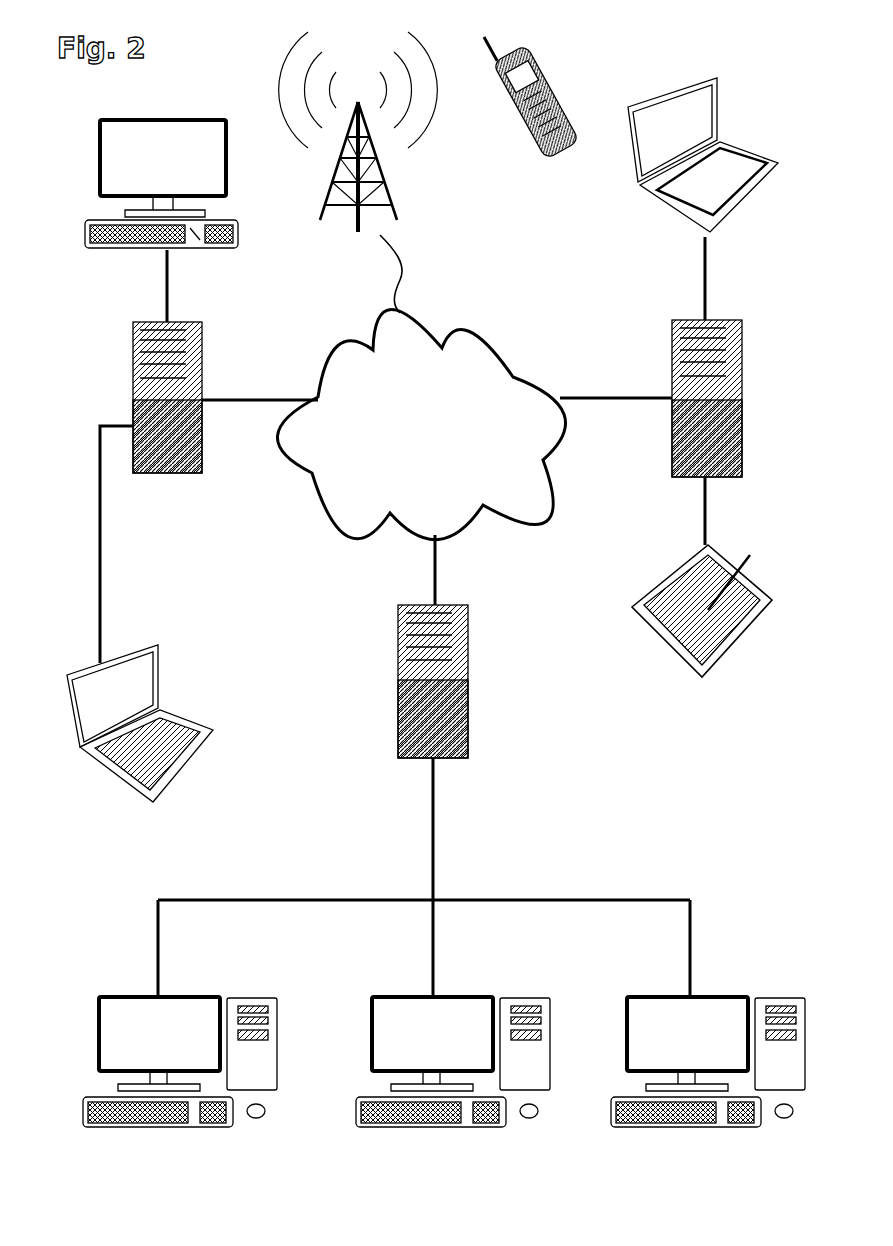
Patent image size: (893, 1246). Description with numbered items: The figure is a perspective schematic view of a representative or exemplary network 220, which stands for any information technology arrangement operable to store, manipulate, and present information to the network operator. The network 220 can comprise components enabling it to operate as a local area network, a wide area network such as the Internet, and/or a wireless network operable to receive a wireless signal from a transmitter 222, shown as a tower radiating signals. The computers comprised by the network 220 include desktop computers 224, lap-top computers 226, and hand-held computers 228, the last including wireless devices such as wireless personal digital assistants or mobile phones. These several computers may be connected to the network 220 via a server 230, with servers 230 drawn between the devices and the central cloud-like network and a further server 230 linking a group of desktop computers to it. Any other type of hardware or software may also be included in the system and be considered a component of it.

The network 220 is at (356, 829).
The transmitter 222 is at (437, 135).
The desktop computers 224 is at (92, 190).
The lap-top computers 226 is at (672, 218).
The hand-held computers 228 is at (550, 65).
The server 230 is at (128, 388).